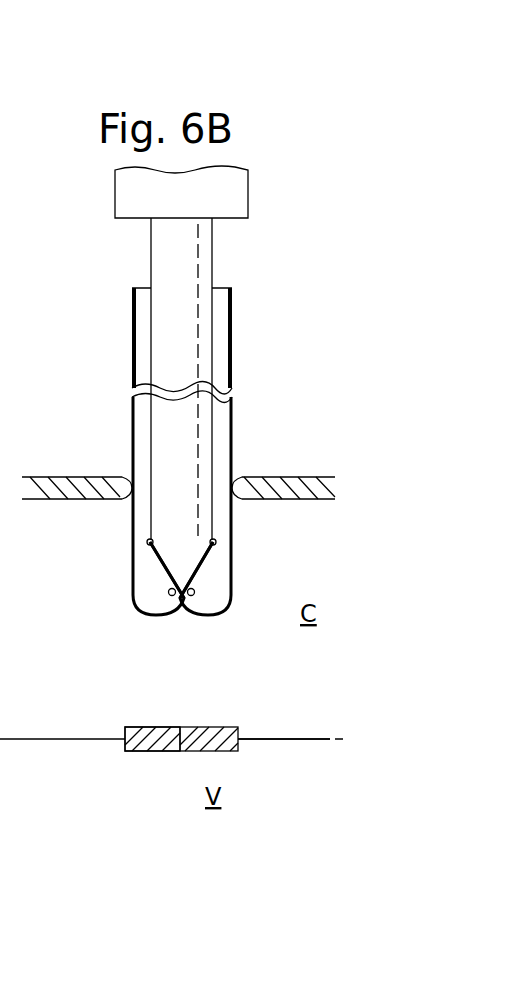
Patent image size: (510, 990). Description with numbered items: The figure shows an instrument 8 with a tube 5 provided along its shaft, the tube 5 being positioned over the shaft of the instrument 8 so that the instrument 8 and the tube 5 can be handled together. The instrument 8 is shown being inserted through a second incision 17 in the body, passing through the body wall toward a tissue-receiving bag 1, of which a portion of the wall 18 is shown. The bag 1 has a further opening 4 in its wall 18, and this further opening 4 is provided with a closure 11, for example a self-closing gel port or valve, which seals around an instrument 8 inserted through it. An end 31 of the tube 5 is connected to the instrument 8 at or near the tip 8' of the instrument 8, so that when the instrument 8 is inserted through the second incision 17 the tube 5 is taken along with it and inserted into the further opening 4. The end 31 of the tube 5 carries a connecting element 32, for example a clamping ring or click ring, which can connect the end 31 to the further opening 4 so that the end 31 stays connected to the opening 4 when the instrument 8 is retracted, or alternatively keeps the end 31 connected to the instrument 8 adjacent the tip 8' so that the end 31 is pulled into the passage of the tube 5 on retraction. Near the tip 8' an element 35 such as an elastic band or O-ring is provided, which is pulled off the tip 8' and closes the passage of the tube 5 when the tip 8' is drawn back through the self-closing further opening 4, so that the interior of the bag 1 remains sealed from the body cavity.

The instrument 8 is at (159, 353).
The tube 5 is at (232, 334).
The second incision 17 is at (238, 471).
The connecting element 32 is at (146, 542).
The end of the tube 31 is at (228, 541).
The tip of the instrument 8' is at (130, 575).
The element 35 is at (172, 597).
The wall of the bag 18 is at (42, 739).
The further opening 4 is at (208, 718).
The closure 11 is at (147, 746).
The tissue-receiving bag 1 is at (318, 718).